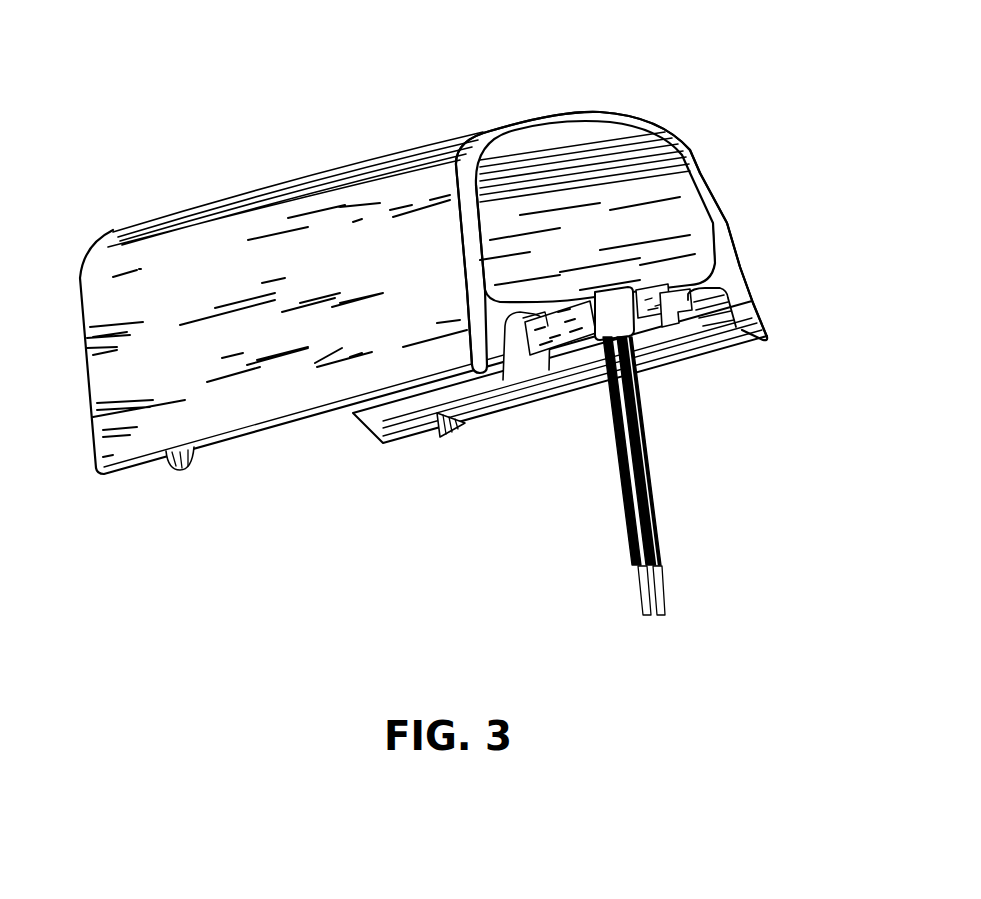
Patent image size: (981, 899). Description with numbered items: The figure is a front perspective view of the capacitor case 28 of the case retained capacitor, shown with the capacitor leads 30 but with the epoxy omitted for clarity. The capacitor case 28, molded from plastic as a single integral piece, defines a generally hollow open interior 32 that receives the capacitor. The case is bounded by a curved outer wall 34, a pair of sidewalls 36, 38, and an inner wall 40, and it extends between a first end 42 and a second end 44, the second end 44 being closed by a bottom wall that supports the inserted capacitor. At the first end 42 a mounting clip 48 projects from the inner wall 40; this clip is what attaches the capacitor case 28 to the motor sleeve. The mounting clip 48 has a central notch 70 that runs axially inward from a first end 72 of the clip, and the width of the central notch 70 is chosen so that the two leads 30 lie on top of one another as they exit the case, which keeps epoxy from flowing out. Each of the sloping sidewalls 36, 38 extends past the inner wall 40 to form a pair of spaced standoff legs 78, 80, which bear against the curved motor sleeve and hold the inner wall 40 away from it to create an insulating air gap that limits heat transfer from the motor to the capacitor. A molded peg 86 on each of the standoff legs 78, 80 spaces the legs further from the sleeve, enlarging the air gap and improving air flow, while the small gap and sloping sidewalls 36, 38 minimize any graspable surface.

The capacitor case 28 is at (760, 204).
The leads 30 is at (655, 494).
The open interior 32 is at (603, 218).
The curved outer wall 34 is at (550, 113).
The sidewall 36 is at (478, 240).
The sidewall 38 is at (710, 177).
The inner wall 40 is at (543, 325).
The first end 42 is at (733, 270).
The second end 44 is at (83, 375).
The mounting clip 48 is at (576, 365).
The central notch 70 is at (645, 378).
The first end 72 is at (703, 293).
The standoff leg 78 is at (513, 382).
The standoff leg 80 is at (757, 322).
The molded peg 86 is at (177, 467).